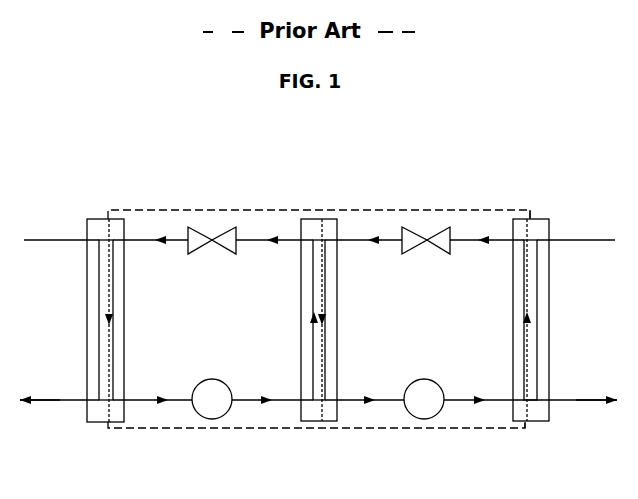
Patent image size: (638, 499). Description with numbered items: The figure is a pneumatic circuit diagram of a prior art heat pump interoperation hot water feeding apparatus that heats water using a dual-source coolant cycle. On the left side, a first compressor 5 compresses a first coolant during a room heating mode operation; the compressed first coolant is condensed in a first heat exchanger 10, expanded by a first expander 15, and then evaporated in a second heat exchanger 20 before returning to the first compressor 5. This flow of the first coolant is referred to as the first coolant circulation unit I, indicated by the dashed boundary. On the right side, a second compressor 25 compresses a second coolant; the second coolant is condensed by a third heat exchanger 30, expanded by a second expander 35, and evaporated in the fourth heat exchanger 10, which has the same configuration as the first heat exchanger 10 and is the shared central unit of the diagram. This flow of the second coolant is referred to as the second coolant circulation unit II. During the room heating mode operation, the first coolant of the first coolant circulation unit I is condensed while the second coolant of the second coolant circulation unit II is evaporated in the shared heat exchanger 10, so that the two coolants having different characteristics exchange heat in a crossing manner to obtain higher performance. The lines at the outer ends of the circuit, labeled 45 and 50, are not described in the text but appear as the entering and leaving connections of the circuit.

The first compressor 5 is at (212, 419).
The first heat exchanger 10 is at (313, 421).
The first expander 15 is at (213, 238).
The second heat exchanger 20 is at (99, 422).
The second compressor 25 is at (424, 419).
The third heat exchanger 30 is at (527, 421).
The second expander 35 is at (427, 238).
The inlet line 45 is at (60, 400).
The outlet line 50 is at (576, 400).
The first coolant circulation unit I is at (272, 210).
The second coolant circulation unit II is at (488, 210).